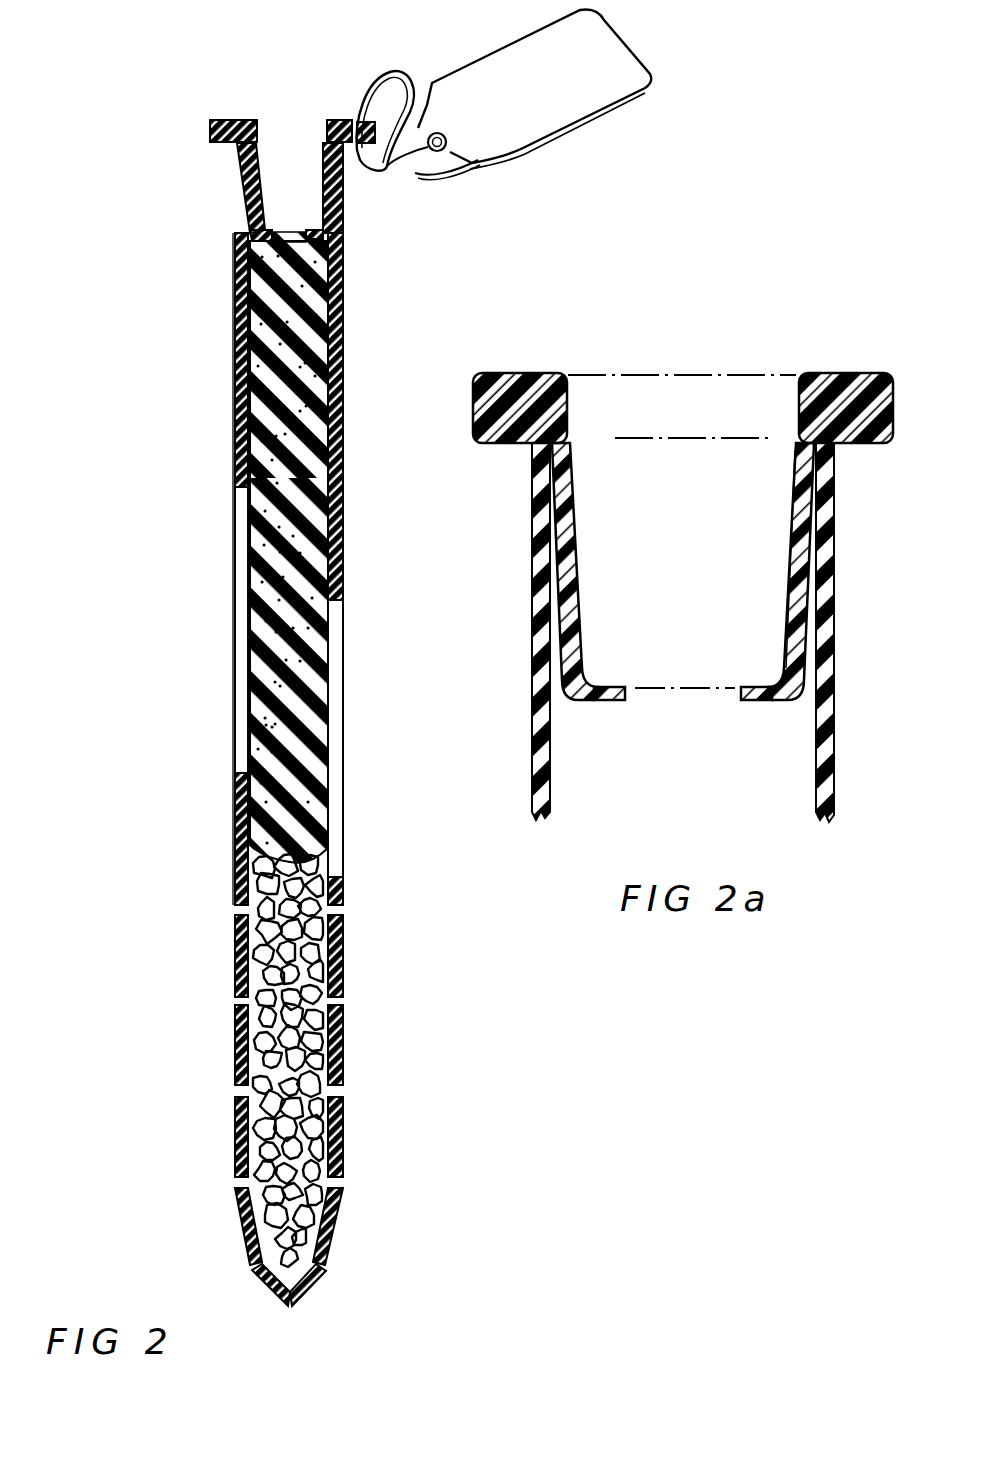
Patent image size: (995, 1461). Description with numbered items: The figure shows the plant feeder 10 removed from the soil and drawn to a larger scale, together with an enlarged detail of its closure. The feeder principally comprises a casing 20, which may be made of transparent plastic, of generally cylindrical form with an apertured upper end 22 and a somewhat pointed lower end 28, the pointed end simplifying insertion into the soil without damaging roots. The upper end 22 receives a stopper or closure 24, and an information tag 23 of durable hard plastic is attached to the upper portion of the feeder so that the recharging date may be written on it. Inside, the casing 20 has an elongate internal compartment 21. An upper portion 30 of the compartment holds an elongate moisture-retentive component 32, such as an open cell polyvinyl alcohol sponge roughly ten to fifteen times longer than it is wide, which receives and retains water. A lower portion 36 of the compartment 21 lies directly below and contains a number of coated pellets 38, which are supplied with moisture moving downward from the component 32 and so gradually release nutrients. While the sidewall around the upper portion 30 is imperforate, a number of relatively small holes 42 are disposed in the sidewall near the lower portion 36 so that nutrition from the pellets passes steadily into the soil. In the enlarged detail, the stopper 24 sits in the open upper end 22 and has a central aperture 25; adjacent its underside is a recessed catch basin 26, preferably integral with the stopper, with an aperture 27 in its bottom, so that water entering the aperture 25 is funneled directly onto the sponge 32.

In FIG. 2, the plant feeder 10 is at (176, 605).
In FIG. 2, the casing 20 is at (235, 430).
In FIG. 2A, the casing 20 is at (836, 800).
In FIG. 2, the internal compartment 21 is at (326, 279).
In FIG. 2, the upper end 22 is at (240, 145).
In FIG. 2A, the upper end 22 is at (828, 448).
In FIG. 2, the information tag 23 is at (598, 36).
In FIG. 2, the stopper or closure 24 is at (236, 120).
In FIG. 2A, the stopper or closure 24 is at (490, 378).
In FIG. 2A, the central aperture 25 is at (664, 390).
In FIG. 2A, the catch basin 26 is at (832, 585).
In FIG. 2, the aperture 27 is at (286, 232).
In FIG. 2A, the aperture 27 is at (693, 695).
In FIG. 2, the lower end 28 is at (306, 1286).
In FIG. 2, the upper portion 30 is at (324, 486).
In FIG. 2, the moisture-retentive component 32 is at (253, 322).
In FIG. 2, the lower portion 36 is at (322, 967).
In FIG. 2, the coated pellets 38 is at (300, 1040).
In FIG. 2, the holes 42 is at (247, 1262).